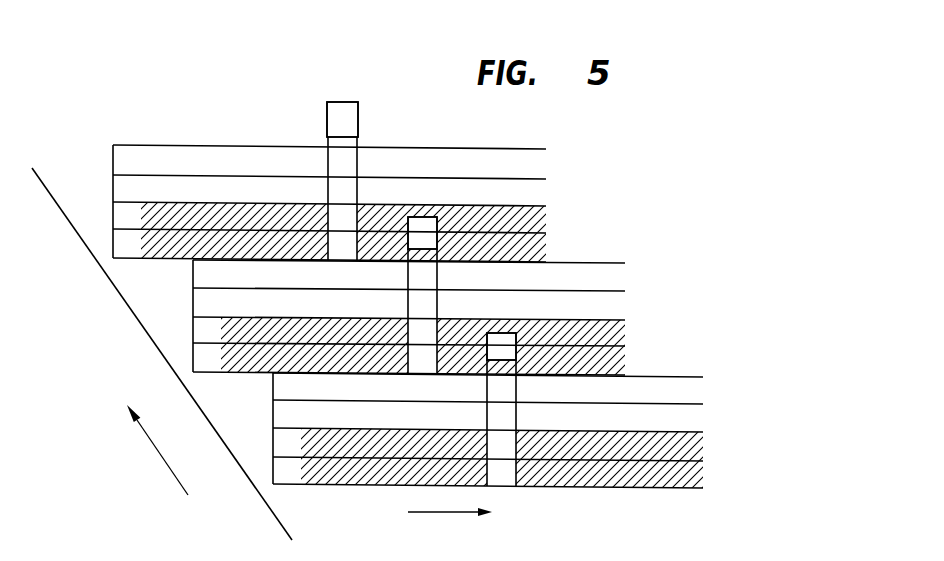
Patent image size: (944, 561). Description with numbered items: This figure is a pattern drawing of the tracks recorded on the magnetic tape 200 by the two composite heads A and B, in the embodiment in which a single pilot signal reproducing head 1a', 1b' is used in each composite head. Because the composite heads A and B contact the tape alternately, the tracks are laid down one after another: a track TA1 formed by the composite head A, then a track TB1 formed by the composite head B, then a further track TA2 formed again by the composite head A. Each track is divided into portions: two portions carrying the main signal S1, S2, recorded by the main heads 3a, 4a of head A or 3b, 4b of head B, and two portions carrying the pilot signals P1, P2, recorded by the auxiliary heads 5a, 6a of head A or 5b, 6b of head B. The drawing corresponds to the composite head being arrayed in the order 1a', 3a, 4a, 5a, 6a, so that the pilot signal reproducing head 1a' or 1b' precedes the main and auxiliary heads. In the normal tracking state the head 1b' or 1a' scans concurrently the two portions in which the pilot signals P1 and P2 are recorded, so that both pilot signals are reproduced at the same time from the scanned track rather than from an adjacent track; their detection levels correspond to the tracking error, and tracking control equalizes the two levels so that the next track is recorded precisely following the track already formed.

The magnetic tape 200 is at (278, 520).
The track recorded by composite head A TA1 is at (112, 247).
The track recorded by composite head B TB1 is at (192, 360).
The track recorded by composite head A TA2 is at (272, 477).
The main signal track S1 is at (408, 278).
The main signal track S2 is at (408, 306).
The pilot signal P1 is at (408, 331).
The pilot signal P2 is at (410, 358).
The pilot signal reproducing head 1a' is at (421, 231).
The pilot signal reproducing head 1b' is at (422, 233).
The composite head A is at (343, 102).
The composite head B is at (423, 217).
The main head 3a is at (422, 269).
The main head 4a is at (422, 303).
The auxiliary head 5a is at (422, 331).
The auxiliary head 6a is at (422, 358).
The main head 3b is at (422, 269).
The main head 4b is at (422, 304).
The auxiliary head 5b is at (422, 332).
The auxiliary head 6b is at (422, 359).